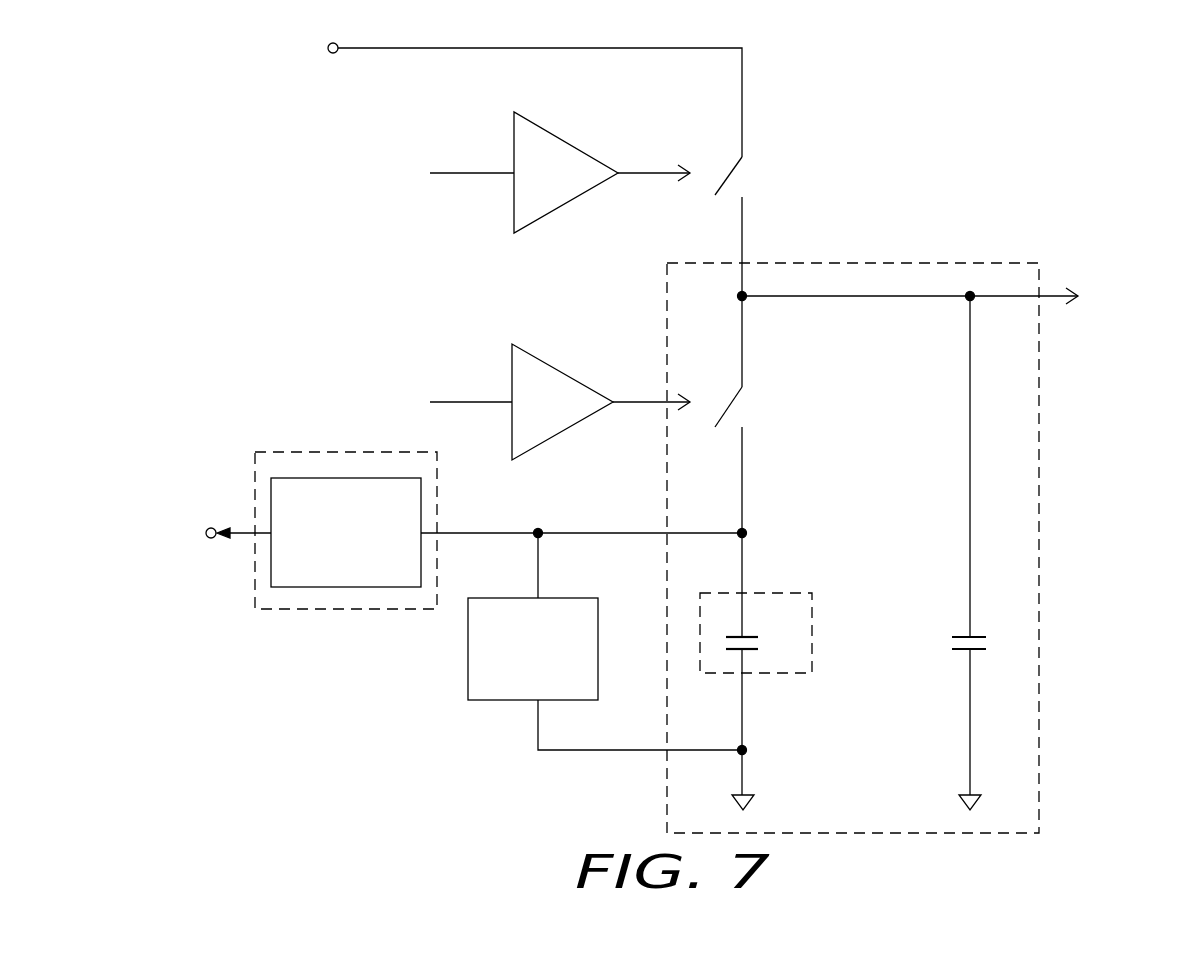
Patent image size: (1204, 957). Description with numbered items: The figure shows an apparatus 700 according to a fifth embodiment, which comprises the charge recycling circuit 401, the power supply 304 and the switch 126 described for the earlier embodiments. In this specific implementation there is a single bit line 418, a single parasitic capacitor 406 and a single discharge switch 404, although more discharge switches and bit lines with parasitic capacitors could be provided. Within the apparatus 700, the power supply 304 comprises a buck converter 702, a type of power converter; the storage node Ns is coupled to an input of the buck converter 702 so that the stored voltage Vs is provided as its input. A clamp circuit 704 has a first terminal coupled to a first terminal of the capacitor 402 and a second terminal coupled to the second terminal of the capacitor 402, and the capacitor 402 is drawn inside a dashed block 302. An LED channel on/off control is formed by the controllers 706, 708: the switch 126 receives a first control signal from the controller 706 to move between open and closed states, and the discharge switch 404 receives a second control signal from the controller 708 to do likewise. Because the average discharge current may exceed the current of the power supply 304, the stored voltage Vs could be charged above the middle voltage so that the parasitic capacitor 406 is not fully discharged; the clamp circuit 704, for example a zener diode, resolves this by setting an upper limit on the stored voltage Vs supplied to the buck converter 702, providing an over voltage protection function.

The apparatus 700 is at (1041, 71).
The controller 706 is at (558, 142).
The controller 708 is at (555, 370).
The switch 126 is at (745, 182).
The discharge switch 404 is at (745, 412).
The bit line 418 is at (995, 296).
The power supply 304 is at (312, 452).
The buck converter 702 is at (360, 478).
The clamp circuit 704 is at (548, 598).
The storage capacitor block 302 is at (770, 676).
The capacitor 402 is at (748, 634).
The parasitic capacitor 406 is at (975, 634).
The charge recycling circuit 401 is at (1040, 755).